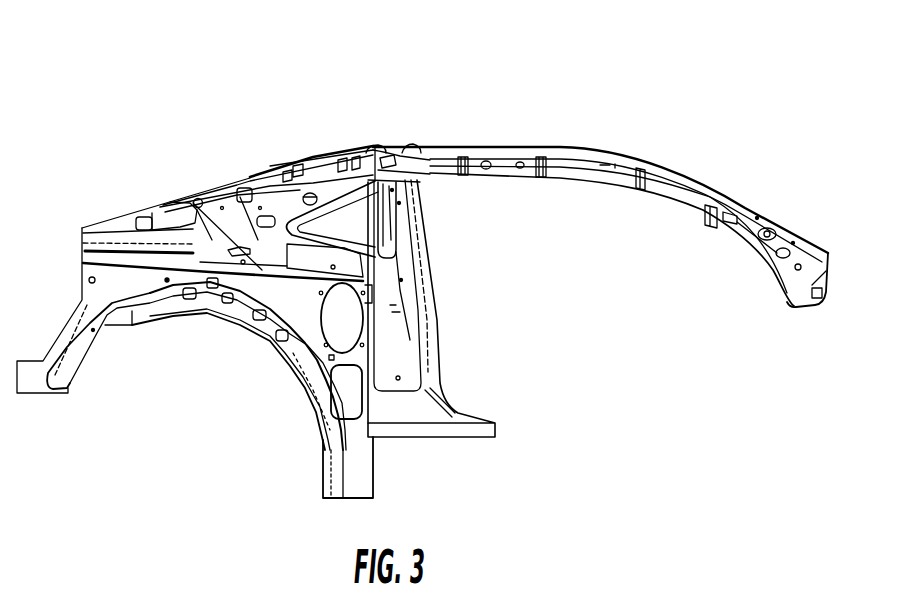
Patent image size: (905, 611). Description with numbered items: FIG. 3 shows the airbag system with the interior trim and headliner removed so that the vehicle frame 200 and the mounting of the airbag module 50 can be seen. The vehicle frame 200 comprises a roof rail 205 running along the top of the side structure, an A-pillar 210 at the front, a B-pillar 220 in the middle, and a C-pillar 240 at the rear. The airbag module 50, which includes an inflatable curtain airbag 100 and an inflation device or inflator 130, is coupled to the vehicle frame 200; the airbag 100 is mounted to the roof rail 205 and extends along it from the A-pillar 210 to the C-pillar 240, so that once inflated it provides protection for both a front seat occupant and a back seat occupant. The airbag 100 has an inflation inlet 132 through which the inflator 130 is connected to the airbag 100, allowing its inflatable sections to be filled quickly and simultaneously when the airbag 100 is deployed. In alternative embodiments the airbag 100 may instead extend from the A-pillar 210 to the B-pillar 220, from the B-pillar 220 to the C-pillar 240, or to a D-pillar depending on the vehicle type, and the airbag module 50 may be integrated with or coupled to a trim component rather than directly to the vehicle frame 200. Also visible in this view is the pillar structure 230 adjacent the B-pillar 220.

The C-pillar 240 is at (160, 198).
The airbag 100 is at (252, 190).
The inflator 130 is at (312, 163).
The airbag module 50 is at (368, 135).
The inlet 132 is at (383, 158).
The roof rail 205 is at (428, 147).
The vehicle frame 200 is at (592, 145).
The A-pillar 210 is at (820, 287).
The B-pillar 220 is at (418, 224).
The pillar inner channel 230 is at (393, 228).